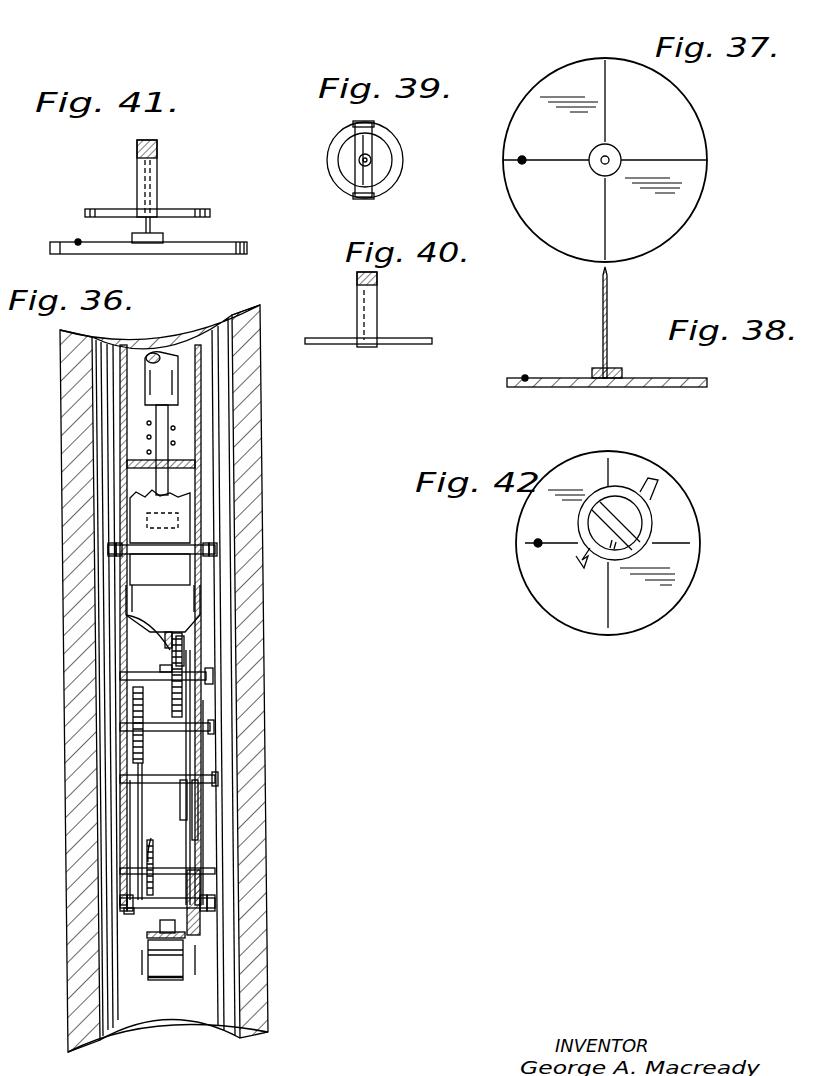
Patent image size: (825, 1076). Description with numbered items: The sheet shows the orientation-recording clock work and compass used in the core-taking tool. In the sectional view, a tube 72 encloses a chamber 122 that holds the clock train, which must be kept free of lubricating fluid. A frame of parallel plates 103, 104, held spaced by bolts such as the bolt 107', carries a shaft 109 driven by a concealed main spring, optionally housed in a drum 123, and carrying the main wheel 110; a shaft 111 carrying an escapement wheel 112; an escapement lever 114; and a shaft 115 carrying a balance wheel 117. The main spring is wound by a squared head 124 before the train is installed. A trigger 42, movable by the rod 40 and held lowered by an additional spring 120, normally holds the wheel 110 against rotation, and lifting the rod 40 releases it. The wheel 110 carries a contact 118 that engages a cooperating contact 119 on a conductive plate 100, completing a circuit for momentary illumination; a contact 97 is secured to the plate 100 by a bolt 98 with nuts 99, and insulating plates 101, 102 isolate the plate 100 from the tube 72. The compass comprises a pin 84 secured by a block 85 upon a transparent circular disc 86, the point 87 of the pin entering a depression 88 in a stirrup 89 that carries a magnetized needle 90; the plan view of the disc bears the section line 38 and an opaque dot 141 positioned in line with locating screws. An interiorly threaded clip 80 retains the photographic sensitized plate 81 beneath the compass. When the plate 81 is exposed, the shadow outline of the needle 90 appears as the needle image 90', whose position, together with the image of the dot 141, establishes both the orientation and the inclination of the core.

In FIG. 36, the rod 40 is at (165, 384).
In FIG. 39, the rod 40 is at (303, 160).
In FIG. 36, the additional spring 120 is at (172, 430).
In FIG. 36, the trigger 42 is at (178, 525).
In FIG. 36, the drum 123 is at (188, 648).
In FIG. 36, the tube 72 is at (248, 658).
In FIG. 36, the squared head 124 is at (214, 676).
In FIG. 36, the chamber 122 is at (222, 708).
In FIG. 36, the parallel plate 103 is at (203, 770).
In FIG. 36, the insulating plate 102 is at (192, 822).
In FIG. 36, the insulating plate 101 is at (202, 840).
In FIG. 36, the wheel 110 is at (167, 650).
In FIG. 36, the contact 118 is at (160, 663).
In FIG. 36, the cooperating contact 119 is at (160, 657).
In FIG. 36, the shaft 109 is at (145, 675).
In FIG. 36, the escapement wheel 112 is at (137, 702).
In FIG. 36, the shaft 111 is at (155, 727).
In FIG. 36, the parallel plate 104 is at (130, 762).
In FIG. 36, the escapement lever 114 is at (140, 812).
In FIG. 36, the shaft 115 is at (156, 858).
In FIG. 36, the balance wheel 117 is at (153, 878).
In FIG. 36, the bolt 107' is at (83, 921).
In FIG. 36, the bolt 98 is at (168, 922).
In FIG. 36, the conductive plate 100 is at (200, 928).
In FIG. 36, the nut 99 is at (172, 925).
In FIG. 36, the contact 97 is at (167, 965).
In FIG. 41, the stirrup 89 is at (150, 180).
In FIG. 39, the stirrup 89 is at (360, 148).
In FIG. 40, the stirrup 89 is at (357, 287).
In FIG. 41, the pin 84 is at (152, 226).
In FIG. 37, the pin 84 is at (601, 165).
In FIG. 38, the pin 84 is at (603, 304).
In FIG. 41, the clip 80 is at (200, 254).
In FIG. 41, the opaque dot 141 is at (78, 242).
In FIG. 37, the opaque dot 141 is at (522, 160).
In FIG. 38, the opaque dot 141 is at (525, 378).
In FIG. 39, the magnetized needle 90 is at (380, 156).
In FIG. 40, the magnetized needle 90 is at (368, 359).
In FIG. 39, the depression 88 is at (360, 167).
In FIG. 37, the transparent circular disc 86 is at (660, 210).
In FIG. 38, the transparent circular disc 86 is at (562, 382).
In FIG. 37, the block 85 is at (616, 152).
In FIG. 38, the block 85 is at (620, 370).
In FIG. 38, the point 87 is at (603, 270).
In FIG. 37, the section line 38 is at (722, 160).
In FIG. 42, the needle image 90' is at (659, 523).
In FIG. 42, the photographic sensitized plate 81 is at (645, 595).